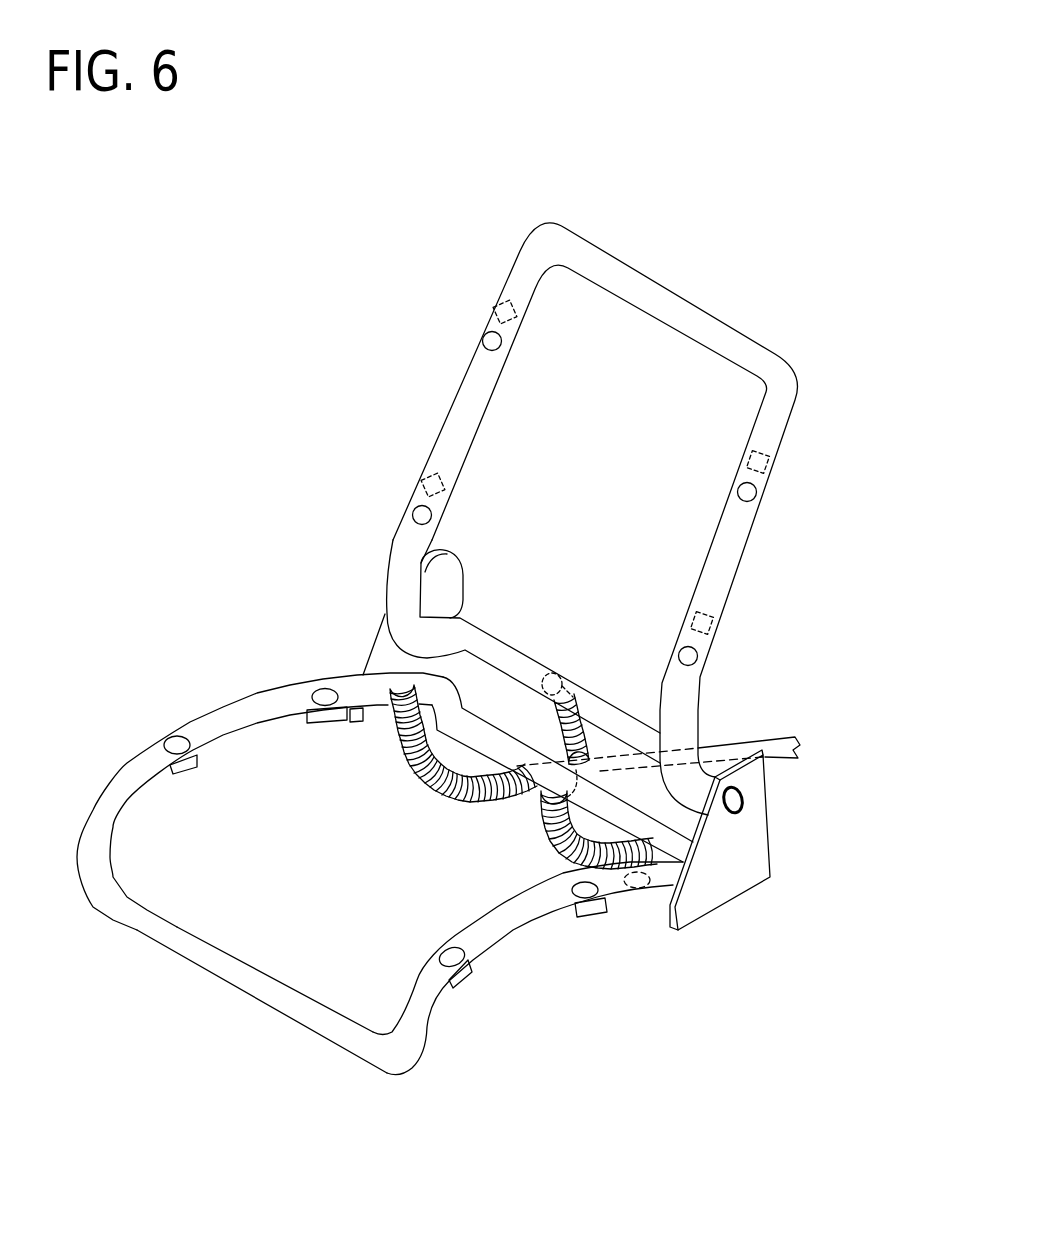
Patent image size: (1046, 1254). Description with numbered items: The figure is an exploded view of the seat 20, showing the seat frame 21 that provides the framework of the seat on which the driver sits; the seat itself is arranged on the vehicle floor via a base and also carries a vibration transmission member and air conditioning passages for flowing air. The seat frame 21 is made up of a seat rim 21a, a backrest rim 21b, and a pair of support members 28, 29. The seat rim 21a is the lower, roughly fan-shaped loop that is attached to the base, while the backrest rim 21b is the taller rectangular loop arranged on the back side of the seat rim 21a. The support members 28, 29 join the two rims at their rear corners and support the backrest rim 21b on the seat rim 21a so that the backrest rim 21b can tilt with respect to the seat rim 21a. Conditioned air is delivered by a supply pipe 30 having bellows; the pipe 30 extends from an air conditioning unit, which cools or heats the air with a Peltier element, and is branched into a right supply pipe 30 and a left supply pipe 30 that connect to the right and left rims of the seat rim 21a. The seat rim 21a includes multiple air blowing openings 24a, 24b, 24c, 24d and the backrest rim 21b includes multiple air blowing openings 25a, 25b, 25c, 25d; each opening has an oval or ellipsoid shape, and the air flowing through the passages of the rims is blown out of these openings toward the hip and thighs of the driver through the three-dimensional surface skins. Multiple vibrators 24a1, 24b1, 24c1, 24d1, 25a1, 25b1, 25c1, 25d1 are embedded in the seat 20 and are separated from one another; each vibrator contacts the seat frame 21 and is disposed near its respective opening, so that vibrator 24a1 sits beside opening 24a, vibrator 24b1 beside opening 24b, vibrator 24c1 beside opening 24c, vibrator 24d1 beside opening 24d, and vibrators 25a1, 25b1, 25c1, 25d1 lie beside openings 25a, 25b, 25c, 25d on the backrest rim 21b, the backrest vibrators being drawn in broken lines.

The seat 20 is at (641, 284).
The seat frame 21 is at (322, 1036).
The seat rim 21a is at (203, 952).
The backrest rim 21b is at (730, 337).
The air blowing opening 24a is at (175, 737).
The vibrator 24a1 is at (183, 774).
The air blowing opening 24b is at (321, 690).
The vibrator 24b1 is at (323, 724).
The air blowing opening 24c is at (462, 958).
The vibrator 24c1 is at (458, 985).
The air blowing opening 24d is at (587, 895).
The vibrator 24d1 is at (580, 917).
The air blowing opening 25a is at (483, 337).
The vibrator 25a1 is at (498, 301).
The air blowing opening 25b is at (414, 510).
The vibrator 25b1 is at (423, 480).
The air blowing opening 25c is at (753, 493).
The vibrator 25c1 is at (768, 462).
The air blowing opening 25d is at (698, 655).
The vibrator 25d1 is at (712, 622).
The support member 28 is at (385, 648).
The support member 29 is at (750, 832).
The supply pipe 30 is at (444, 800).